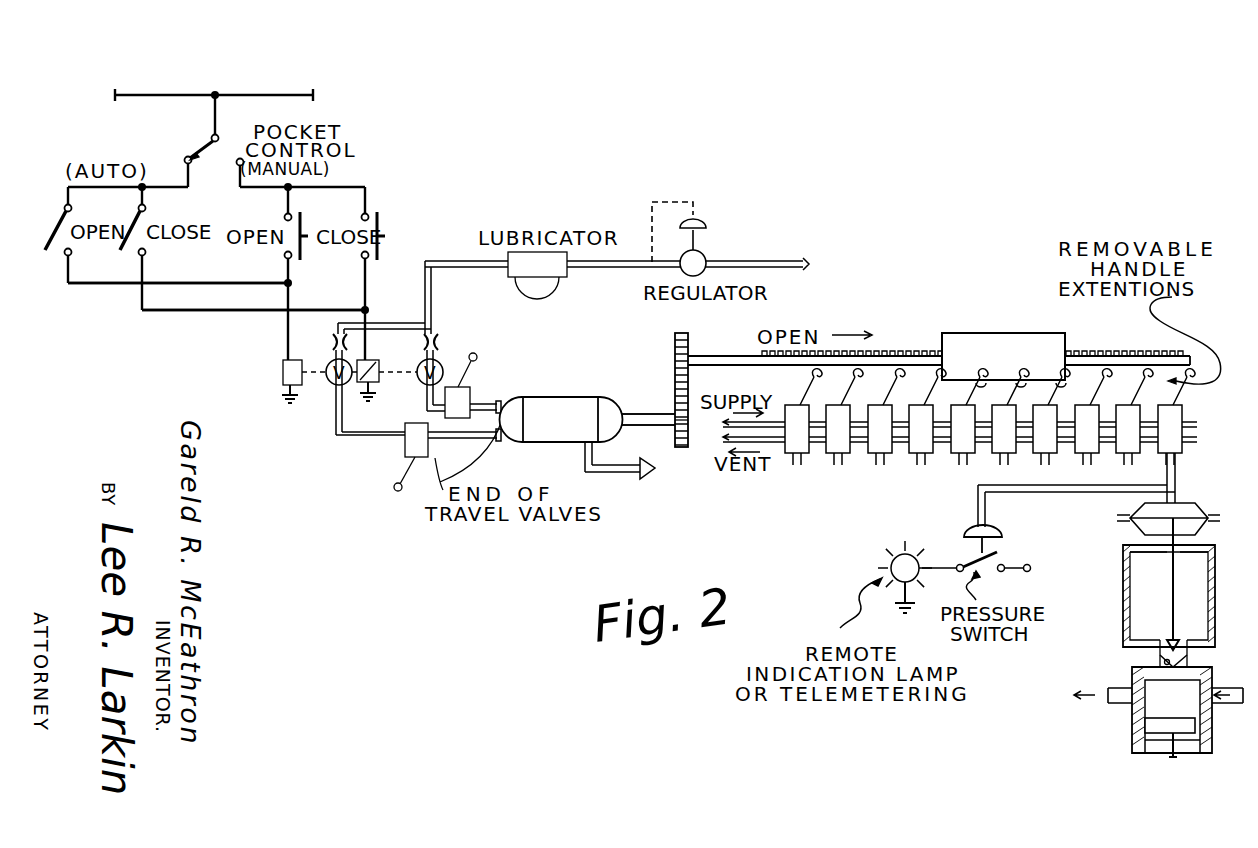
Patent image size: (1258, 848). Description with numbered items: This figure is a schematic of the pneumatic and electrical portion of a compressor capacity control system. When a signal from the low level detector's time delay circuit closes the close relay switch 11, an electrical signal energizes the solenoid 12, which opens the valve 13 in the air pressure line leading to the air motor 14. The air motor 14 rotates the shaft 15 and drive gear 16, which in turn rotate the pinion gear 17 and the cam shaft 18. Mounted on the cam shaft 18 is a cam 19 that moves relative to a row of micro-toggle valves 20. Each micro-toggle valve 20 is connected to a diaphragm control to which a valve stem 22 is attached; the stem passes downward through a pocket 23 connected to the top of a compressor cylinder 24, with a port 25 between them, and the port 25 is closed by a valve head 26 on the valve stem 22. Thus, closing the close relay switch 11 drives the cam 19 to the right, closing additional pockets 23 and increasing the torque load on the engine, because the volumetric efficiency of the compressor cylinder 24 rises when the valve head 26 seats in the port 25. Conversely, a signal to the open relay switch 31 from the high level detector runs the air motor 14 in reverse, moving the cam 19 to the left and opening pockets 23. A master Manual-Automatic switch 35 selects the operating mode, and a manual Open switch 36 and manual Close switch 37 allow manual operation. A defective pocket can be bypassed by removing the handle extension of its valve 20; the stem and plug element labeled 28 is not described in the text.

The close relay switch 11 is at (130, 253).
The solenoid 12 is at (374, 366).
The valve 13 is at (444, 362).
The air motor 14 is at (554, 396).
The shaft 15 is at (640, 412).
The drive gear 16 is at (678, 449).
The pinion gear 17 is at (674, 342).
The cam shaft 18 is at (716, 355).
The cam 19 is at (1000, 333).
The micro-toggle valves 20 is at (935, 455).
The valve stem 22 is at (1160, 566).
The pocket 23 is at (1123, 586).
The compressor cylinder 24 is at (1135, 718).
The port 25 is at (1160, 662).
The valve head 26 is at (1170, 645).
The valve plug 28 is at (1140, 738).
The open relay switch 31 is at (48, 242).
The master Manual-Automatic switch 35 is at (208, 141).
The manual Open switch 36 is at (295, 207).
The manual Close switch 37 is at (373, 209).